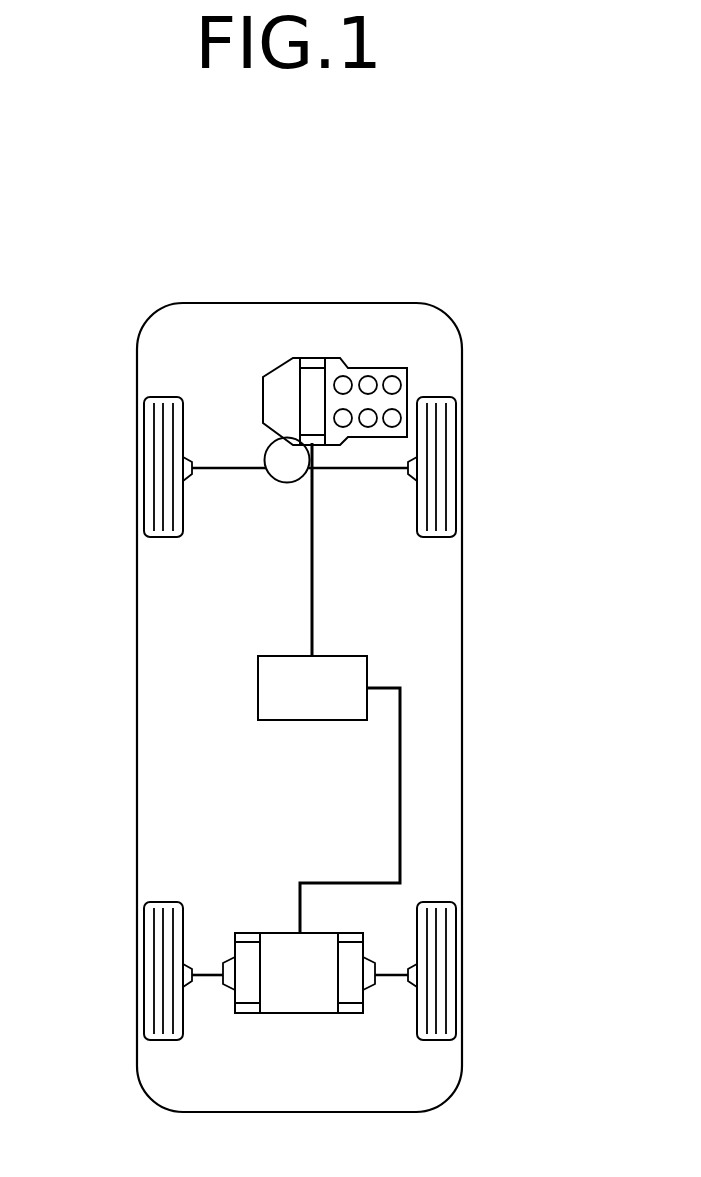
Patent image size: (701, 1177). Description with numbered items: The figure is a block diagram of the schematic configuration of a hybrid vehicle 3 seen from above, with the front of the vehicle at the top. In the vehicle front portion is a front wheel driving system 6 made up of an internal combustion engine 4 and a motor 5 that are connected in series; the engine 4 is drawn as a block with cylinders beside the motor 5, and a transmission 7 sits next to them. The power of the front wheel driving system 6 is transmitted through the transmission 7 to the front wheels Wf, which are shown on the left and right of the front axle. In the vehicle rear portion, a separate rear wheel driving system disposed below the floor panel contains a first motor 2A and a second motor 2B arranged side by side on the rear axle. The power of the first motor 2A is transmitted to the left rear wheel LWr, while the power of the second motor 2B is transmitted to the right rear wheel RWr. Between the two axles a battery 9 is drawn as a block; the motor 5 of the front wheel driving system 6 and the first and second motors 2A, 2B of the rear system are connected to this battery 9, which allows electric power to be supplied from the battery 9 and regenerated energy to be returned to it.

The vehicle 3 is at (486, 258).
The internal combustion engine 4 is at (361, 370).
The motor 5 is at (316, 366).
The front wheel driving system 6 is at (353, 327).
The transmission 7 is at (283, 385).
The battery 9 is at (350, 655).
The first motor 2A is at (248, 1006).
The second motor 2B is at (351, 1006).
The front wheels Wf is at (145, 466).
The left rear wheel LWr is at (145, 974).
The right rear wheel RWr is at (456, 972).